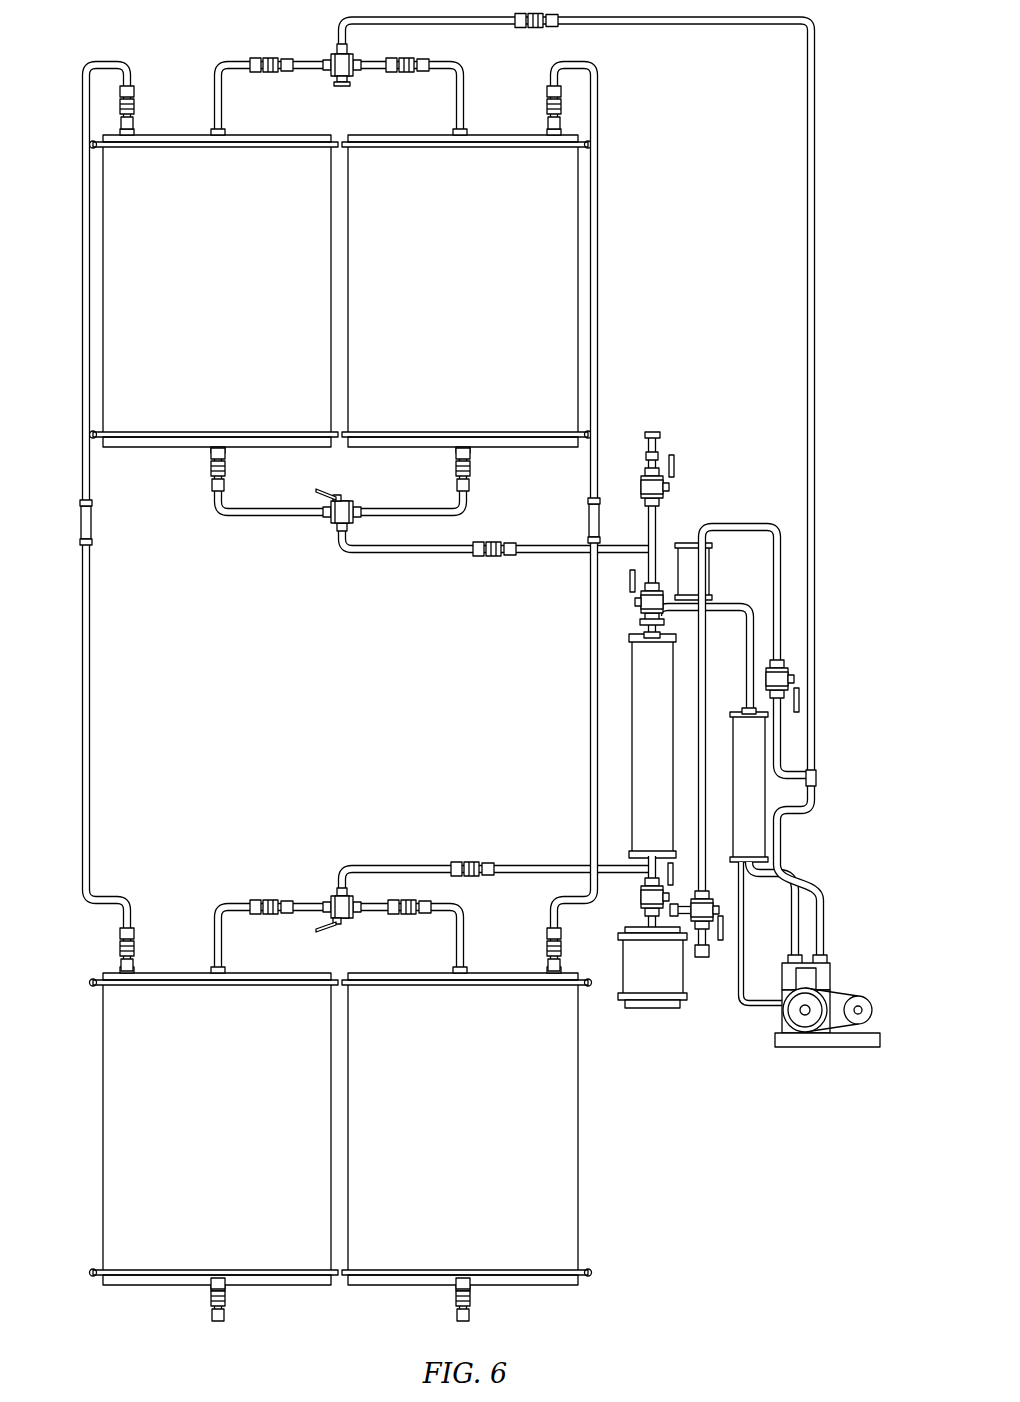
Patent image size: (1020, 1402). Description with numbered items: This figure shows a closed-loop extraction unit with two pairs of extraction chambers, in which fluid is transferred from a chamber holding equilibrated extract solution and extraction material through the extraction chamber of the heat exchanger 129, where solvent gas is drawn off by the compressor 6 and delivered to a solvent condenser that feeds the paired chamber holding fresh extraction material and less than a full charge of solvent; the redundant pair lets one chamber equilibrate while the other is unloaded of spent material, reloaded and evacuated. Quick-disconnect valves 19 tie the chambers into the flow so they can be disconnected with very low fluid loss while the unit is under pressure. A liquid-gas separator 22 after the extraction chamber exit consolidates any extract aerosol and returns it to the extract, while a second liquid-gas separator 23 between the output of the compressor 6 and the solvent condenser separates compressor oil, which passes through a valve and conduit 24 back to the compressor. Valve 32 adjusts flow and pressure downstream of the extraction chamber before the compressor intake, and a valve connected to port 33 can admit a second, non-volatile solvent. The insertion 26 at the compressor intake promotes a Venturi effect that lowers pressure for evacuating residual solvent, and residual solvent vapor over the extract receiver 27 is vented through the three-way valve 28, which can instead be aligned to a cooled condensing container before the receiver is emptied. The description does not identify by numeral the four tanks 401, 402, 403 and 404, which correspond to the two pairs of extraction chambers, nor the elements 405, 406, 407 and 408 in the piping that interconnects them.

The compressor 6 is at (828, 985).
The quick-disconnect valve 19 is at (133, 112).
The liquid-gas separator 22 is at (712, 556).
The liquid-gas separator 23 is at (737, 752).
The conduit 24 is at (738, 995).
The insertion 26 is at (815, 778).
The extract receiver 27 is at (628, 935).
The three-way valve 28 is at (706, 900).
The valve 32 is at (784, 668).
The port 33 is at (667, 482).
The heat exchanger 129 is at (652, 746).
The tank 401 is at (578, 282).
The tank 402 is at (576, 1138).
The tank 403 is at (100, 280).
The tank 404 is at (104, 1135).
The coupling 405 is at (92, 520).
The three-way valve 406 is at (335, 522).
The three-way valve 407 is at (336, 895).
The three-way valve 408 is at (338, 50).